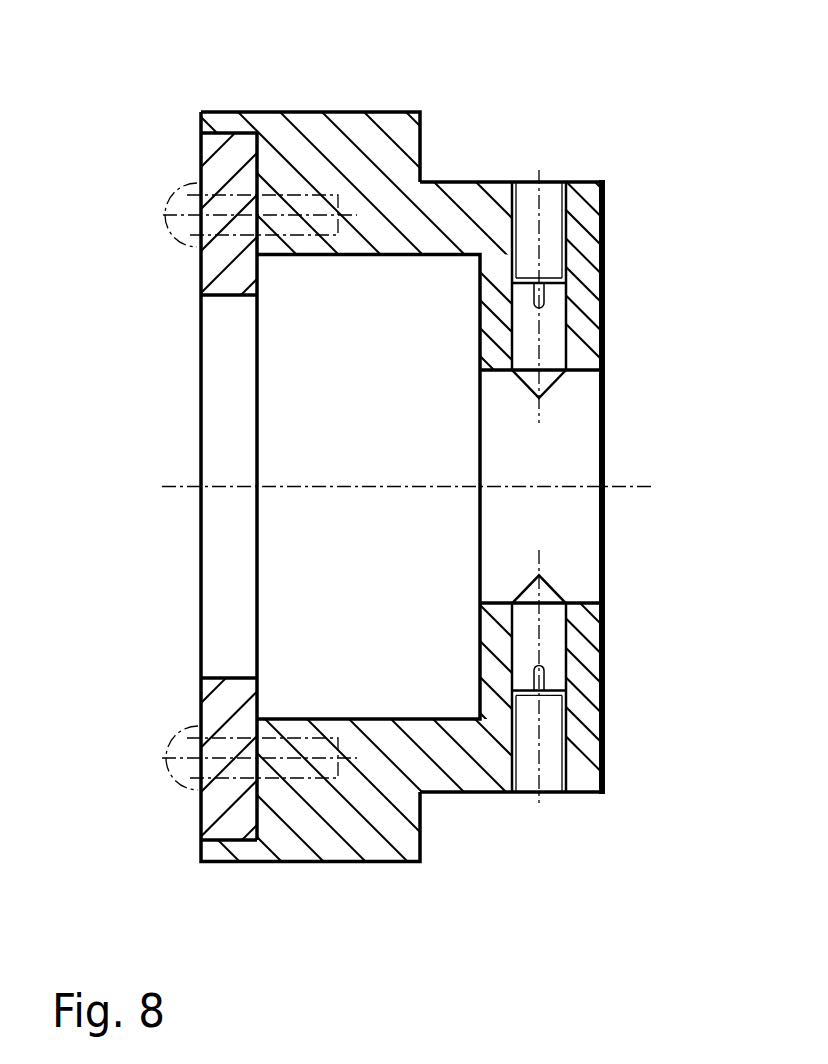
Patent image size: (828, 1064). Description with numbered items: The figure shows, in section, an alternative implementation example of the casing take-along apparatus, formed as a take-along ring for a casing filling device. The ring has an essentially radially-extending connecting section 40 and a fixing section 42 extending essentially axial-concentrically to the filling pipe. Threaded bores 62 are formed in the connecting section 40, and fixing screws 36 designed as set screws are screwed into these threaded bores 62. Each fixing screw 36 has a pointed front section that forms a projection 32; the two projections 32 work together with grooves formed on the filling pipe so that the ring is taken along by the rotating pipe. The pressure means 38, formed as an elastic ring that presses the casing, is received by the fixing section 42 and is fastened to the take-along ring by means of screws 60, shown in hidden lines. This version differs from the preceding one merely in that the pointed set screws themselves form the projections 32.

The projection 32 is at (552, 380).
The fixing screw 36 is at (552, 326).
The pressure means 38 is at (222, 703).
The connecting section 40 is at (587, 242).
The fixing section 42 is at (345, 155).
The screws 60 is at (175, 200).
The threaded bore 62 is at (515, 227).